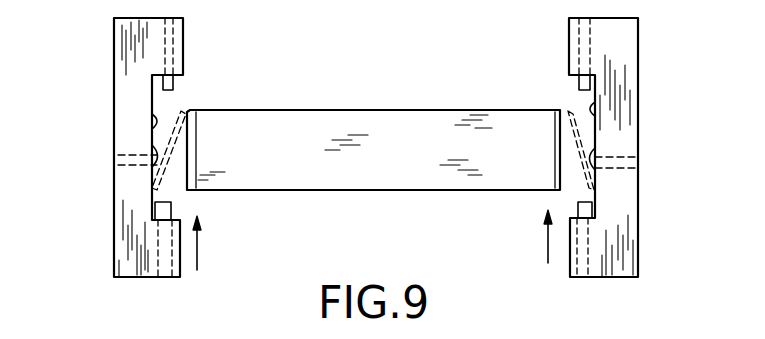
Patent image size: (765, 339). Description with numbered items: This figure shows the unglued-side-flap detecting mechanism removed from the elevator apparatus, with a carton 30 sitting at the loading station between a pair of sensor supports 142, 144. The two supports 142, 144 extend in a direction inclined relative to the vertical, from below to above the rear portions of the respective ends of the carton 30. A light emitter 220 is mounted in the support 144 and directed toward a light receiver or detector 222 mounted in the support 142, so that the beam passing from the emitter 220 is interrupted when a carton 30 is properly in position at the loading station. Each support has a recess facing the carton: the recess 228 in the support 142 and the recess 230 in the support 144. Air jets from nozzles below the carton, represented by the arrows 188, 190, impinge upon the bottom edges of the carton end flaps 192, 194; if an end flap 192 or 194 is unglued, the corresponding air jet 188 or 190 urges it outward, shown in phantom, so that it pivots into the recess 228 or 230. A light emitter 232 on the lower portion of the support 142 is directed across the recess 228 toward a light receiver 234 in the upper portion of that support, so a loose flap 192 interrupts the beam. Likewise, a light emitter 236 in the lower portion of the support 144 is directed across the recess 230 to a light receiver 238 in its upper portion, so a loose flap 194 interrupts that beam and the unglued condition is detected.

The sensor support 142 is at (133, 55).
The sensor support 144 is at (627, 60).
The carton 30 is at (367, 108).
The carton end flap 192 is at (196, 143).
The carton end flap 194 is at (558, 150).
The light receiver 234 is at (178, 80).
The light receiver 238 is at (578, 82).
The light emitter 232 is at (152, 215).
The light emitter 236 is at (597, 212).
The recess 228 is at (157, 127).
The recess 230 is at (590, 105).
The light receiver 222 is at (157, 152).
The light emitter 220 is at (592, 150).
The air jet 188 is at (197, 245).
The air jet 190 is at (545, 247).